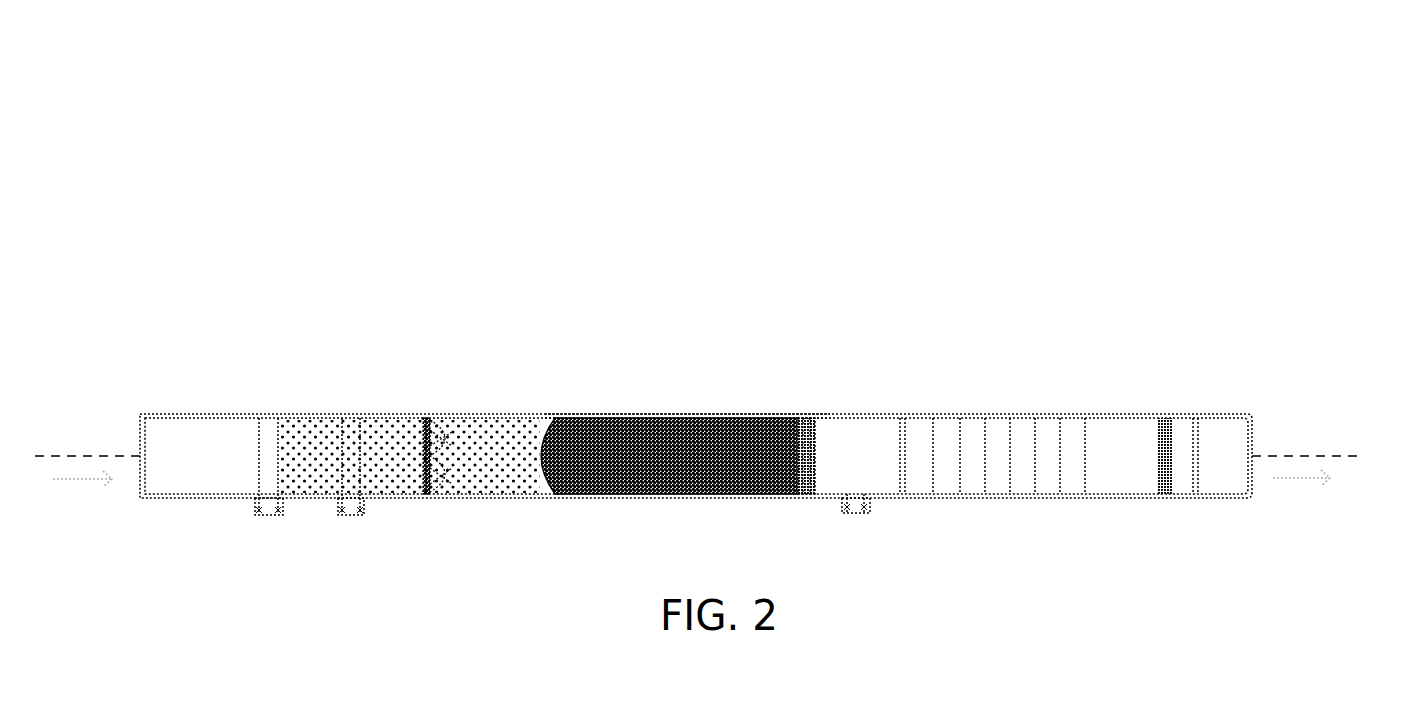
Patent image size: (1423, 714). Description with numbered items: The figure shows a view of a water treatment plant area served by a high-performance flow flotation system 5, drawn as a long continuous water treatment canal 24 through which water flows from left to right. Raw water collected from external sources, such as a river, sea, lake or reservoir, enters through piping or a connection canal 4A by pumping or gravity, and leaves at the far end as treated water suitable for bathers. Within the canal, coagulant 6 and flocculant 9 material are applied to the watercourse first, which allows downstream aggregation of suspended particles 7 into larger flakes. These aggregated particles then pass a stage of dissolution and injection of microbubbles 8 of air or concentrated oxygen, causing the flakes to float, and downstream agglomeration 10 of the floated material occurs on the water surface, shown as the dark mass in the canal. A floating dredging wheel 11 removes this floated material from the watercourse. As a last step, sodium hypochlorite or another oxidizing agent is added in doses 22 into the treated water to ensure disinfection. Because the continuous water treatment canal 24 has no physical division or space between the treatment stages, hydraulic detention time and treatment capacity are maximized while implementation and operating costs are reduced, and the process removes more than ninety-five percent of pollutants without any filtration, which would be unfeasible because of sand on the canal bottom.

The connection canal 4A is at (107, 433).
The high-performance flow flotation system 5 is at (725, 217).
The coagulant 6 is at (277, 407).
The aggregation of suspended particles 7 is at (389, 452).
The microbubbles 8 is at (434, 407).
The flocculant 9 is at (359, 407).
The agglomeration 10 is at (581, 408).
The floating dredging wheel 11 is at (817, 408).
The oxidizing agent dose 22 is at (863, 472).
The continuous water treatment canal 24 is at (697, 389).